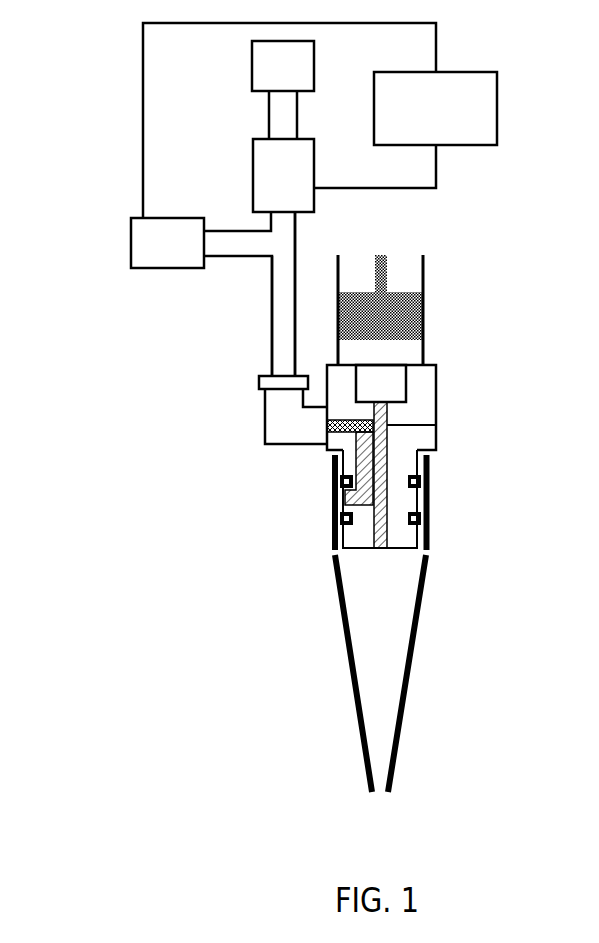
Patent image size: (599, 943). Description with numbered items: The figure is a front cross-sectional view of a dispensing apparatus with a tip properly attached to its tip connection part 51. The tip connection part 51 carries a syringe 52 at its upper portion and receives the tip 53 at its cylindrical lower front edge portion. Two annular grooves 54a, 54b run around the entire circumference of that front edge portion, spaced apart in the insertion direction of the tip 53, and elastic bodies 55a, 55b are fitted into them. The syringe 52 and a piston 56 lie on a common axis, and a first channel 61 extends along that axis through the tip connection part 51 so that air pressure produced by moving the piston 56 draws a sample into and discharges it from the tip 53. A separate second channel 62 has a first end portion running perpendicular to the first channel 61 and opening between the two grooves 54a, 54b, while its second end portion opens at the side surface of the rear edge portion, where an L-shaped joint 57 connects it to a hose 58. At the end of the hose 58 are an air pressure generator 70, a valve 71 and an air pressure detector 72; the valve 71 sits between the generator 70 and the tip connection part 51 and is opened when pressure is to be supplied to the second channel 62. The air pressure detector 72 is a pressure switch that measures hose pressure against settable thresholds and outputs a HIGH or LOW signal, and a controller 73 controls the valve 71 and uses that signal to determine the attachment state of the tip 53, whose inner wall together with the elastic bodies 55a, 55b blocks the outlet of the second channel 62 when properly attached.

The tip connection part 51 is at (423, 388).
The syringe 52 is at (424, 352).
The tip 53 is at (420, 620).
The annular groove 54a is at (340, 493).
The annular groove 54b is at (340, 527).
The elastic body 55a is at (420, 473).
The elastic body 55b is at (420, 510).
The piston 56 is at (398, 302).
The L-shaped joint 57 is at (283, 400).
The hose 58 is at (283, 327).
The first channel 61 is at (222, 427).
The second channel 62 is at (327, 427).
The air pressure generator 70 is at (265, 72).
The valve 71 is at (265, 163).
The air pressure detector 72 is at (143, 243).
The controller 73 is at (484, 107).